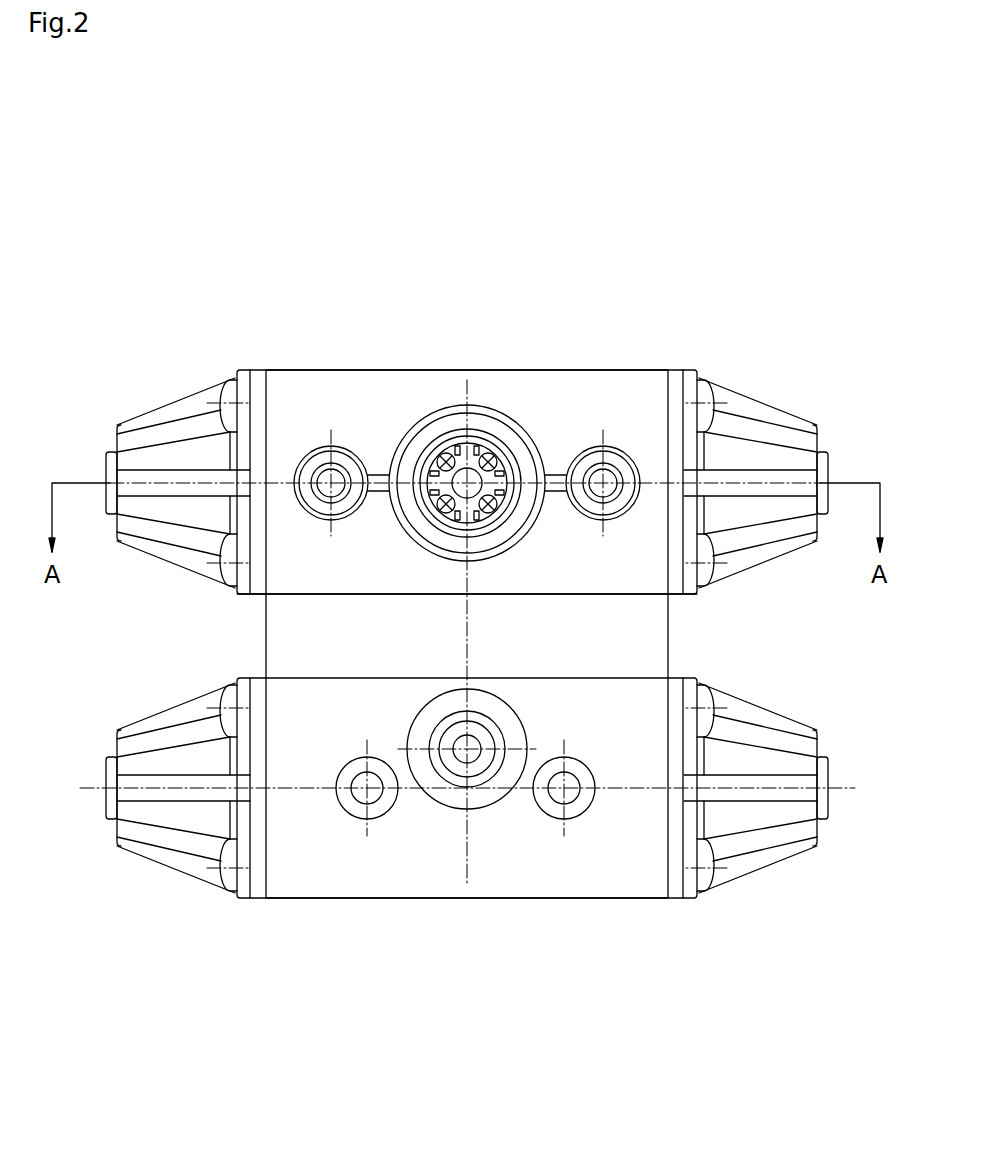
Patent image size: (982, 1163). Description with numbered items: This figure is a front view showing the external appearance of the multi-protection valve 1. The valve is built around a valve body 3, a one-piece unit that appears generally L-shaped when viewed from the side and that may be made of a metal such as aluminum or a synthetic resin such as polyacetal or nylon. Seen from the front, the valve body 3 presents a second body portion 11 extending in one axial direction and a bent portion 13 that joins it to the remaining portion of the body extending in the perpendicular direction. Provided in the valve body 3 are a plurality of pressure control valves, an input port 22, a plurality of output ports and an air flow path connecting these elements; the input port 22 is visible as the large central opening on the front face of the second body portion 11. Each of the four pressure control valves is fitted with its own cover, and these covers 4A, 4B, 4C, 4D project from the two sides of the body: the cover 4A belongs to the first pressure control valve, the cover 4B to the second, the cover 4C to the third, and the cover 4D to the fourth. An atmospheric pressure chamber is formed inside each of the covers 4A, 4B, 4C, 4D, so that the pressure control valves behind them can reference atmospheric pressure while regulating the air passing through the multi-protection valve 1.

The multi-protection valve 1 is at (667, 309).
The valve body 3 is at (402, 898).
The second body portion 11 is at (555, 370).
The bent portion 13 is at (572, 890).
The input port 22 is at (449, 447).
The cover 4A is at (162, 410).
The cover 4B is at (766, 410).
The cover 4C is at (160, 862).
The cover 4D is at (752, 870).